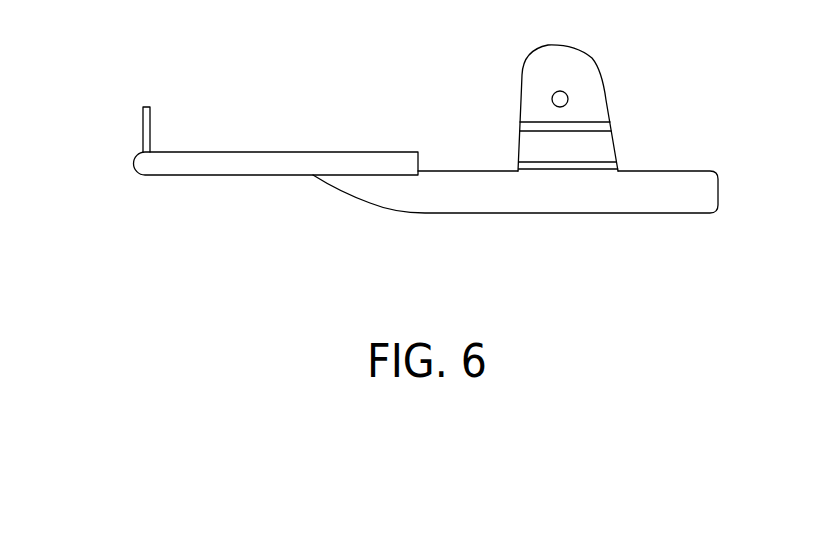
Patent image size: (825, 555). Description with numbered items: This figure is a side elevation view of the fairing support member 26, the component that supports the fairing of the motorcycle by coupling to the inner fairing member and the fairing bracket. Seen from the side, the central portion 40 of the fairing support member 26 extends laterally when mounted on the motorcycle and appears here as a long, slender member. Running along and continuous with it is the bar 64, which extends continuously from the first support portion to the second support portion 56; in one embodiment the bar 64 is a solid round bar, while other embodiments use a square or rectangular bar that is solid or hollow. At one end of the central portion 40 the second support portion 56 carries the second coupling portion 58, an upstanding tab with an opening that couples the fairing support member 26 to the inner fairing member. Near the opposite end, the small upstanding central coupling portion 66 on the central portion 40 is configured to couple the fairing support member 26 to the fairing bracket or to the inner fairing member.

The fairing support member 26 is at (760, 62).
The central portion 40 is at (128, 163).
The second support portion 56 is at (668, 169).
The second coupling portion 58 is at (583, 98).
The bar 64 is at (235, 163).
The central coupling portion 66 is at (153, 125).